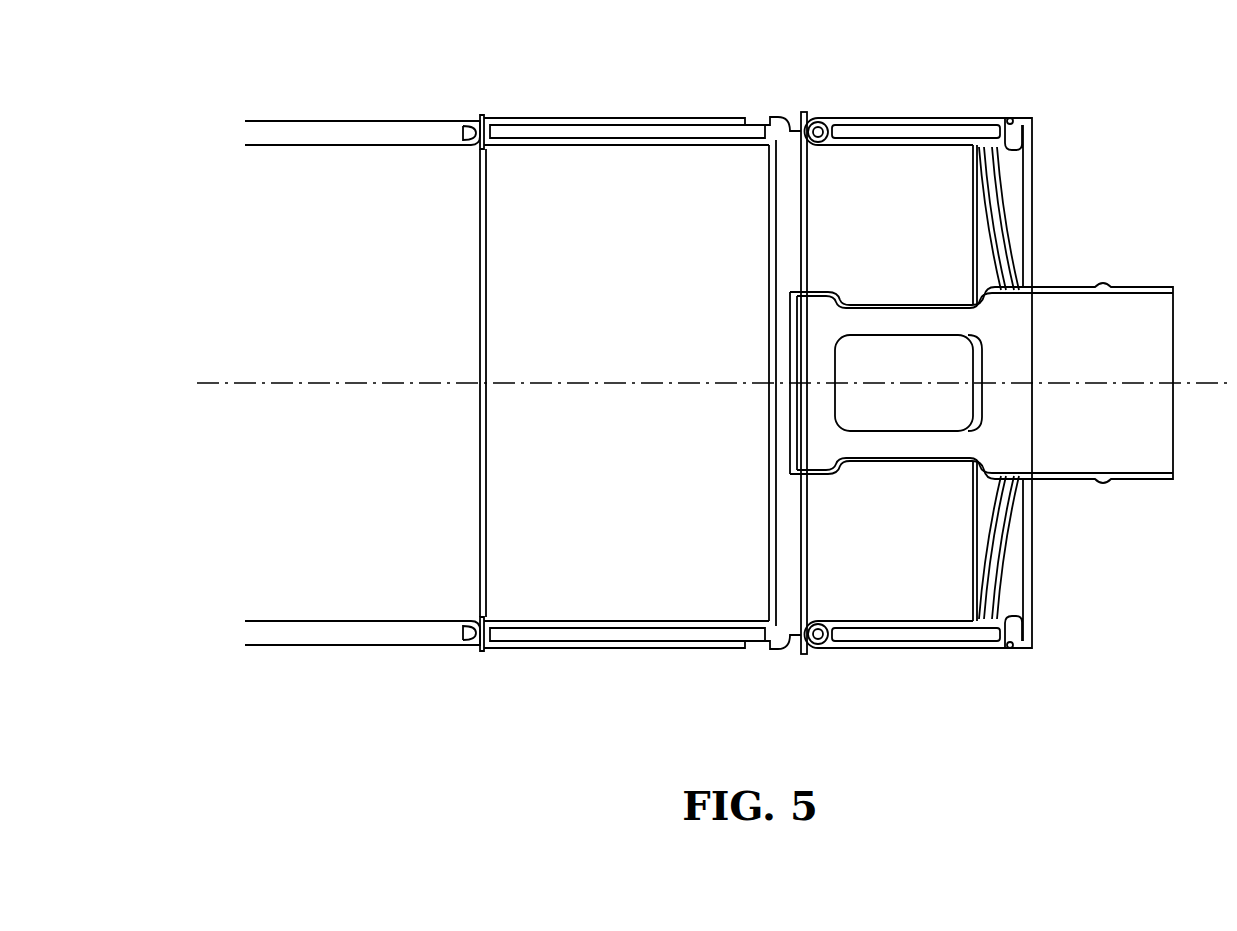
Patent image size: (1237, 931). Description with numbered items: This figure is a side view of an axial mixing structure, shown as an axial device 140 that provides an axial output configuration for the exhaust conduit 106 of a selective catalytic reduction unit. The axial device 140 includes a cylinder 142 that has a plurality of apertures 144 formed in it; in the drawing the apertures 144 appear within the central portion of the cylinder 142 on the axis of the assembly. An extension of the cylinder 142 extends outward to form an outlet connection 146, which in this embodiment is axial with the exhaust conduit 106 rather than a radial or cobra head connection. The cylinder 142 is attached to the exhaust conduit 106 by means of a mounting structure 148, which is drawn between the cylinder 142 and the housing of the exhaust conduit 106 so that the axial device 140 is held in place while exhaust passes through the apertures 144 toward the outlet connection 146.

The exhaust conduit 106 is at (628, 138).
The axial device 140 is at (1053, 603).
The cylinder 142 is at (927, 442).
The apertures 144 is at (883, 362).
The outlet connection 146 is at (1063, 320).
The mounting structure 148 is at (995, 196).